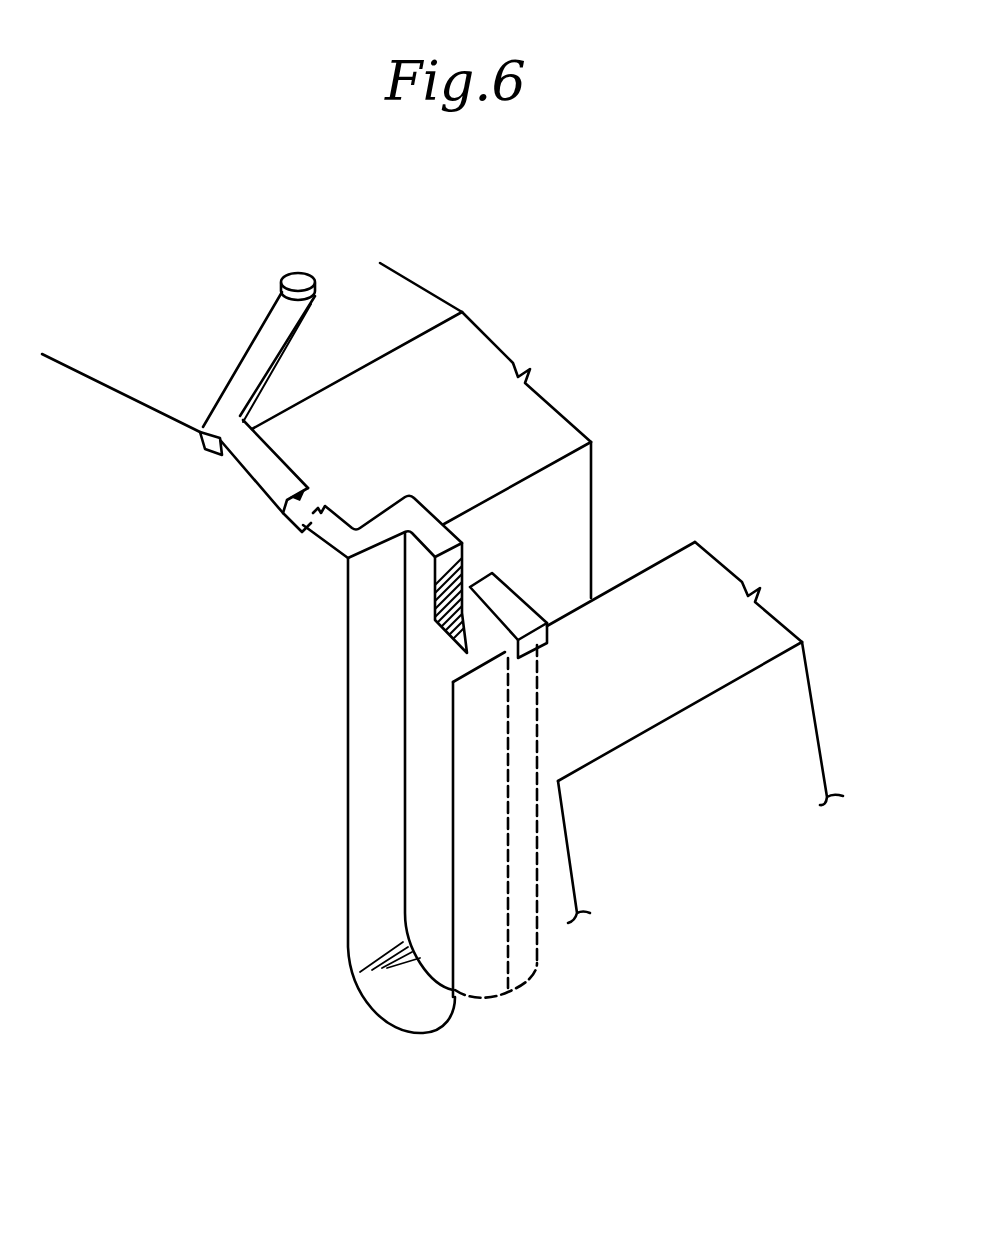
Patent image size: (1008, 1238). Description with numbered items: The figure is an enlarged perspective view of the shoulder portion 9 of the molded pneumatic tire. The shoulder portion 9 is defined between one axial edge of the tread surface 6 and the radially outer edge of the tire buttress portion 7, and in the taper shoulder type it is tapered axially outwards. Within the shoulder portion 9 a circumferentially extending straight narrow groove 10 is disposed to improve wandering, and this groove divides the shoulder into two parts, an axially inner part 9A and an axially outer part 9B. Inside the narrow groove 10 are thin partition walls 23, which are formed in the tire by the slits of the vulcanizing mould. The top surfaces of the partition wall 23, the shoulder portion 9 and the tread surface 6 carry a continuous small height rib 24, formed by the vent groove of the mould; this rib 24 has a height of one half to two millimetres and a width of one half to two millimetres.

The tread surface 6 is at (408, 302).
The tire buttress portion 7 is at (768, 702).
The shoulder portion 9 is at (785, 290).
The axially inner part 9A is at (527, 407).
The axially outer part 9B is at (708, 593).
The narrow groove 10 is at (616, 510).
The partition wall 23 is at (427, 675).
The rib 24 is at (350, 540).